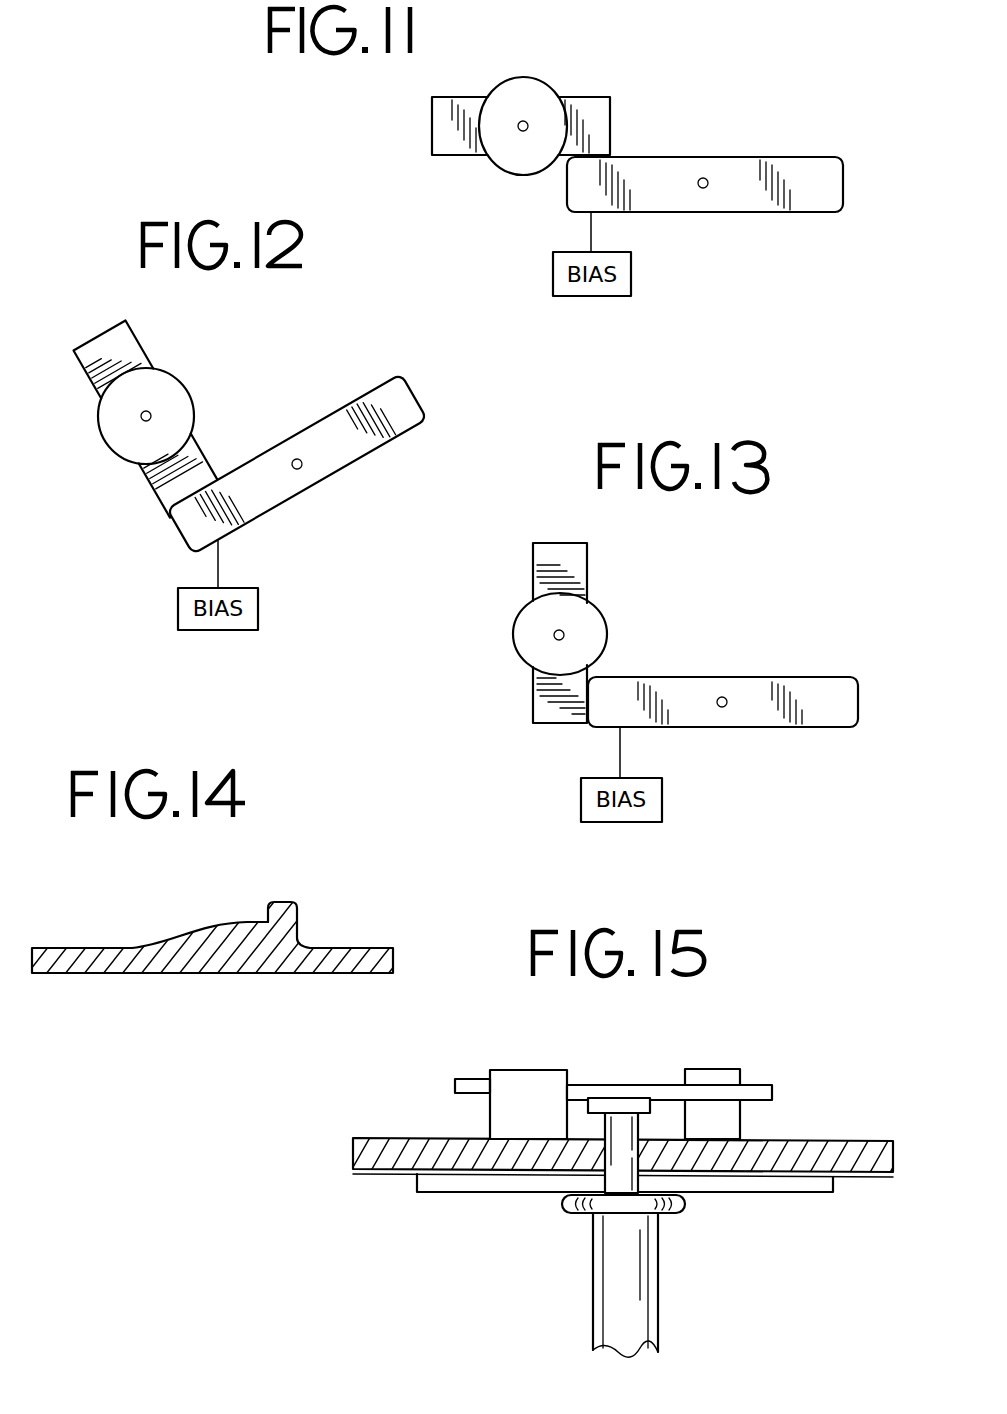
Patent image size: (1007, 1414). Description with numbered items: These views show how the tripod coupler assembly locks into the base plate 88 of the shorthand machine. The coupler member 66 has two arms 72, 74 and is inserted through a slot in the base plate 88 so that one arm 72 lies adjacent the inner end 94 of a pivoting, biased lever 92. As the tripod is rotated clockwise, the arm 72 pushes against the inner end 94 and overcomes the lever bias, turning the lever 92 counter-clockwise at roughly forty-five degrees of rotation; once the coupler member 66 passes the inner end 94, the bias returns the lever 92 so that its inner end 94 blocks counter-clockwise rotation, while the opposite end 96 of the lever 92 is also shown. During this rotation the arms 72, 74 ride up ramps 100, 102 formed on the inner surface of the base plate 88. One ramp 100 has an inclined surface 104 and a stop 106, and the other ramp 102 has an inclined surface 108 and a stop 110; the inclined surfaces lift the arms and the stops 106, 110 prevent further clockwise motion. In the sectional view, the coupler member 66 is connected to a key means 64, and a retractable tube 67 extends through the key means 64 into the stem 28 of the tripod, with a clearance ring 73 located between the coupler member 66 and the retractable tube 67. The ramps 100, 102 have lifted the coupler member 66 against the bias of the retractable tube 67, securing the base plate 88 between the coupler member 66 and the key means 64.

In FIG. 11, the coupler member 66 is at (527, 77).
In FIG. 12, the coupler member 66 is at (180, 378).
In FIG. 13, the coupler member 66 is at (513, 637).
In FIG. 15, the coupler member 66 is at (580, 1087).
In FIG. 11, the arm 72 is at (450, 113).
In FIG. 12, the arm 72 is at (112, 345).
In FIG. 13, the arm 72 is at (552, 552).
In FIG. 11, the arm 74 is at (595, 112).
In FIG. 12, the arm 74 is at (167, 473).
In FIG. 13, the arm 74 is at (548, 703).
In FIG. 11, the lever 92 is at (730, 157).
In FIG. 12, the lever 92 is at (295, 433).
In FIG. 13, the lever 92 is at (740, 673).
In FIG. 11, the inner end 94 is at (622, 173).
In FIG. 12, the inner end 94 is at (210, 510).
In FIG. 13, the inner end 94 is at (608, 692).
In FIG. 11, the second end of bias plate 96 is at (805, 175).
In FIG. 12, the second end of bias plate 96 is at (385, 408).
In FIG. 13, the second end of bias plate 96 is at (830, 695).
In FIG. 14, the base plate 88 is at (83, 972).
In FIG. 15, the base plate 88 is at (863, 1178).
In FIG. 14, the ramp 100 is at (193, 952).
In FIG. 15, the ramp 100 is at (476, 1078).
In FIG. 14, the inclined surface 104 is at (227, 920).
In FIG. 14, the stop 106 is at (285, 898).
In FIG. 15, the stop 106 is at (525, 1083).
In FIG. 15, the clearance ring 73 is at (607, 1106).
In FIG. 15, the retractable tube 67 is at (632, 1134).
In FIG. 15, the stop 110 is at (723, 1076).
In FIG. 15, the inclined surface 108 is at (730, 1110).
In FIG. 15, the ramp 102 is at (775, 1115).
In FIG. 15, the key means 64 is at (783, 1184).
In FIG. 15, the stem 28 is at (615, 1297).